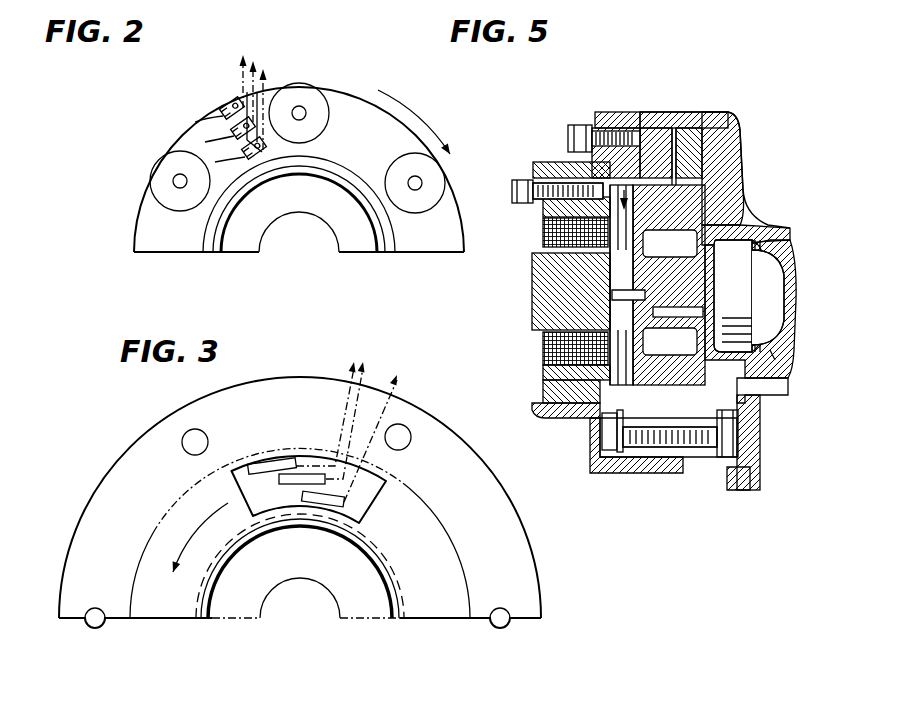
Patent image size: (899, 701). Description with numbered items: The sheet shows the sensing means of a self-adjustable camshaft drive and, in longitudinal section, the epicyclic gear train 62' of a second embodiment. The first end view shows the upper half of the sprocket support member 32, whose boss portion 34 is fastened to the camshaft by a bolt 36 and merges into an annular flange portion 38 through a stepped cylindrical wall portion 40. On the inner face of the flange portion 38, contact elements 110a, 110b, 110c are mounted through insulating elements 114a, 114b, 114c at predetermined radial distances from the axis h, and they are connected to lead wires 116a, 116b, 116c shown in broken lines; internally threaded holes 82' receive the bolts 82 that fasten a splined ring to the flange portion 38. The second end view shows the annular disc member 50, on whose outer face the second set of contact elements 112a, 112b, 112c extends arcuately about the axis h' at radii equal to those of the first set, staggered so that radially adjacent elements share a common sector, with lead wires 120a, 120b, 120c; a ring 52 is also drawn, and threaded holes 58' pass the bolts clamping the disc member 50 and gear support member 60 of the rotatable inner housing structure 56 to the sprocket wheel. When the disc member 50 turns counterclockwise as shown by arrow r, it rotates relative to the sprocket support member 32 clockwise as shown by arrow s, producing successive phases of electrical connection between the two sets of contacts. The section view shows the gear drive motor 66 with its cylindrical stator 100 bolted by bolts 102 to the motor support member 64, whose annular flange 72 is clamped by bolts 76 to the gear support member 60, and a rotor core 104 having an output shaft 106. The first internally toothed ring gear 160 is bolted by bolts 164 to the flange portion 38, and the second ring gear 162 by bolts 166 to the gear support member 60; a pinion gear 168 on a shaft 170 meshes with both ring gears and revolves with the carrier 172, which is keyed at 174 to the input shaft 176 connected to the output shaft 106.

In FIG. 2, the sprocket support member 32 is at (245, 255).
In FIG. 3, the sprocket support member 32 is at (232, 602).
In FIG. 5, the sprocket support member 32 is at (775, 360).
In FIG. 2, the boss portion 34 is at (362, 246).
In FIG. 5, the bolt 36 is at (775, 245).
In FIG. 2, the annular flange portion 38 is at (138, 232).
In FIG. 5, the annular flange portion 38 is at (720, 112).
In FIG. 2, the stepped cylindrical wall portion 40 is at (385, 242).
In FIG. 3, the annular disc member 50 is at (84, 505).
In FIG. 5, the annular disc member 50 is at (752, 492).
In FIG. 3, the inner rotor ring 52 is at (404, 622).
In FIG. 5, the rotatable inner housing structure 56 is at (592, 472).
In FIG. 3, the internally threaded holes 58' is at (311, 534).
In FIG. 5, the gear support member 60 is at (655, 474).
In FIG. 5, the epicyclic gear train 62' is at (619, 86).
In FIG. 5, the motor support member 64 is at (590, 445).
In FIG. 5, the gear drive motor 66 is at (615, 128).
In FIG. 5, the annular flange 72 is at (585, 125).
In FIG. 5, the bolts 76 is at (568, 138).
In FIG. 2, the bolts 82 is at (147, 181).
In FIG. 2, the internally threaded holes 82' is at (385, 148).
In FIG. 5, the cylindrical stator 100 is at (560, 410).
In FIG. 5, the bolts 102 is at (540, 180).
In FIG. 5, the rotor core 104 is at (543, 380).
In FIG. 5, the output shaft 106 is at (576, 303).
In FIG. 2, the contact element 110a is at (228, 102).
In FIG. 2, the contact element 110b is at (238, 123).
In FIG. 2, the contact element 110c is at (248, 143).
In FIG. 3, the contact element 112a is at (258, 462).
In FIG. 3, the contact element 112b is at (300, 474).
In FIG. 3, the contact element 112c is at (320, 506).
In FIG. 2, the insulating element 114a is at (195, 122).
In FIG. 2, the insulating element 114b is at (205, 142).
In FIG. 2, the insulating element 114c is at (215, 162).
In FIG. 2, the lead wire 116a is at (243, 70).
In FIG. 2, the lead wire 116b is at (255, 78).
In FIG. 2, the lead wire 116c is at (268, 95).
In FIG. 3, the lead wire 120a is at (338, 388).
In FIG. 3, the lead wire 120b is at (368, 388).
In FIG. 3, the lead wire 120c is at (390, 407).
In FIG. 5, the first internally toothed ring gear 160 is at (690, 128).
In FIG. 5, the second internally toothed ring gear 162 is at (658, 128).
In FIG. 5, the bolts 164 is at (700, 474).
In FIG. 5, the bolts 166 is at (622, 458).
In FIG. 5, the pinion gear 168 is at (722, 180).
In FIG. 5, the shaft 170 is at (735, 228).
In FIG. 5, the carrier 172 is at (609, 285).
In FIG. 5, the key 174 is at (630, 298).
In FIG. 5, the input shaft 176 is at (669, 285).
In FIG. 2, the axis of rotation h is at (299, 251).
In FIG. 3, the axis of rotation h' is at (300, 625).
In FIG. 3, the arrow r is at (200, 540).
In FIG. 2, the arrow s is at (414, 121).